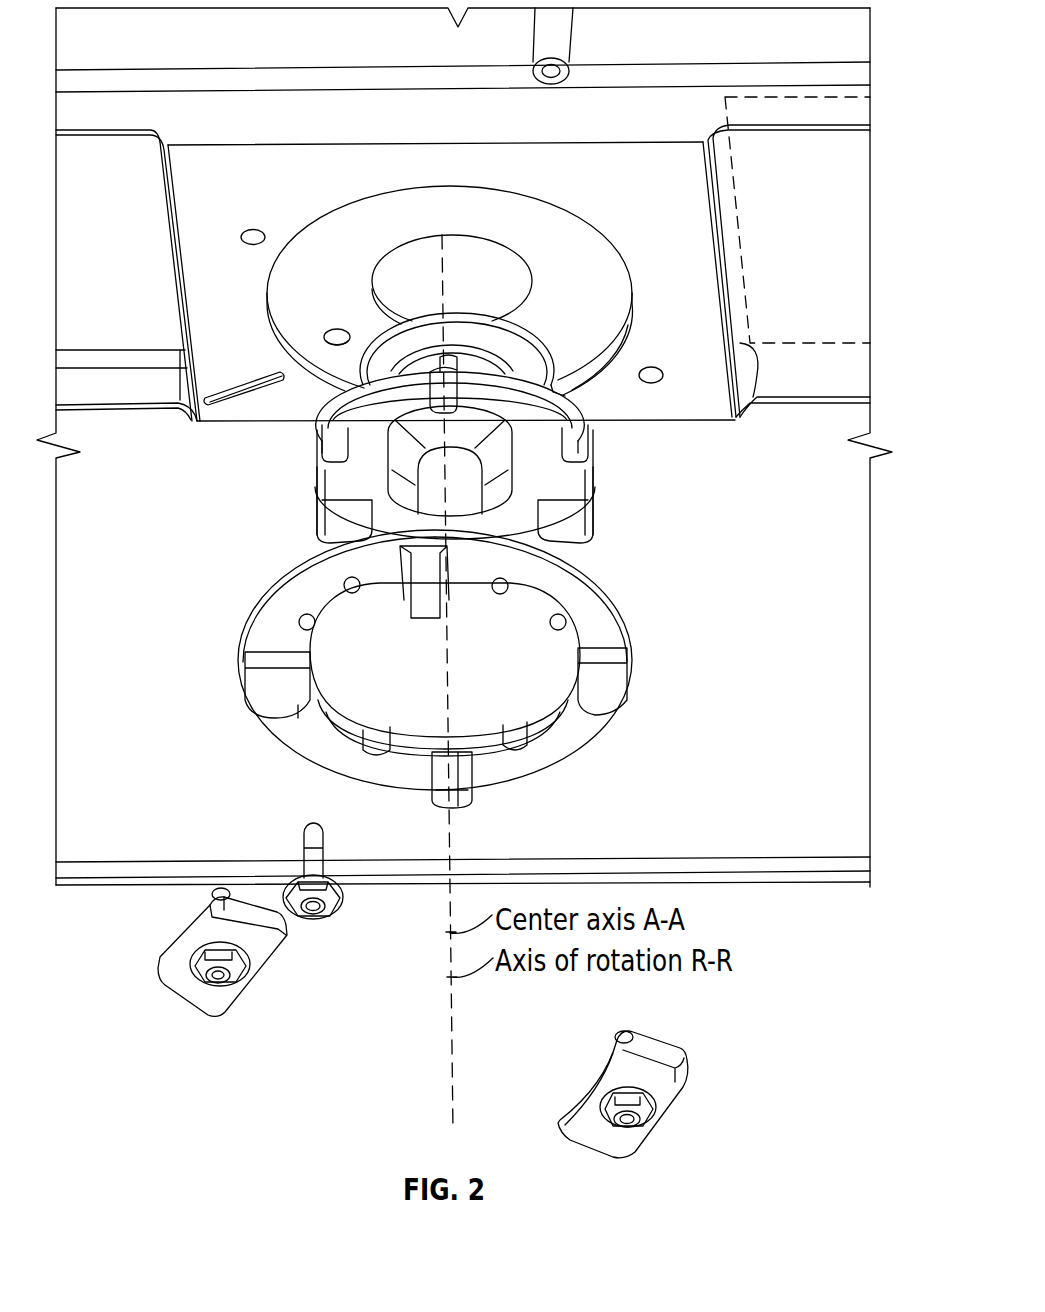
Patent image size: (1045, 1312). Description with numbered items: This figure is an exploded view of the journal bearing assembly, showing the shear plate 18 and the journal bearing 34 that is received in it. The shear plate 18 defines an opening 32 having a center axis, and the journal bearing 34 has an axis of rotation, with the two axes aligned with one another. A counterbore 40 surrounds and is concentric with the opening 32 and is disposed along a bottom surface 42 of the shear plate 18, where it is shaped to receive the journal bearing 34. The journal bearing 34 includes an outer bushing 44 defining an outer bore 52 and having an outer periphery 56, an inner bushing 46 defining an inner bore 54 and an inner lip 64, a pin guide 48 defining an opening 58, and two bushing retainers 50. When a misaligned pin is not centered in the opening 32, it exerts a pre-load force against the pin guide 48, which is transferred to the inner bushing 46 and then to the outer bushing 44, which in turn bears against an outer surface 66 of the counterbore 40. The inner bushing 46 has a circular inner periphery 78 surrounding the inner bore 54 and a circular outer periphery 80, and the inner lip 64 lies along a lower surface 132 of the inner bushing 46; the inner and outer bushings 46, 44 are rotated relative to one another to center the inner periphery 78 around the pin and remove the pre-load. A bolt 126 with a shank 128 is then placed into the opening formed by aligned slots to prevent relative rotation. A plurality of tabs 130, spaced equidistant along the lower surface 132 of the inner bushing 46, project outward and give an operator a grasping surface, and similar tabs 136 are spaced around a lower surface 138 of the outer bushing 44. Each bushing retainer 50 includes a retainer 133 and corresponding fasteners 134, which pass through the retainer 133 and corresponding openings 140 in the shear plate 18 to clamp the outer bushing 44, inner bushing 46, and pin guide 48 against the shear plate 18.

The shear plate 18 is at (820, 563).
The opening 32 is at (530, 283).
The journal bearing 34 is at (658, 694).
The counterbore 40 is at (562, 243).
The bottom surface 42 is at (209, 328).
The outer bushing 44 is at (597, 620).
The inner bushing 46 is at (587, 485).
The pin guide 48 is at (525, 360).
The bushing retainers 50 is at (472, 1047).
The outer bore 52 is at (540, 722).
The inner bore 54 is at (317, 547).
The outer periphery 56 is at (257, 610).
The opening 58 is at (455, 372).
The inner lip 64 is at (333, 445).
The outer surface 66 is at (321, 328).
The inner periphery 78 is at (615, 368).
The outer periphery 80 is at (588, 440).
The bolt 126 is at (328, 866).
The shank 128 is at (318, 836).
The tabs 130 is at (330, 472).
The lower surface 132 is at (387, 486).
The retainer 133 is at (270, 942).
The fasteners 134 is at (227, 987).
The tabs 136 is at (423, 608).
The lower surface 138 is at (270, 612).
The openings 140 is at (255, 229).